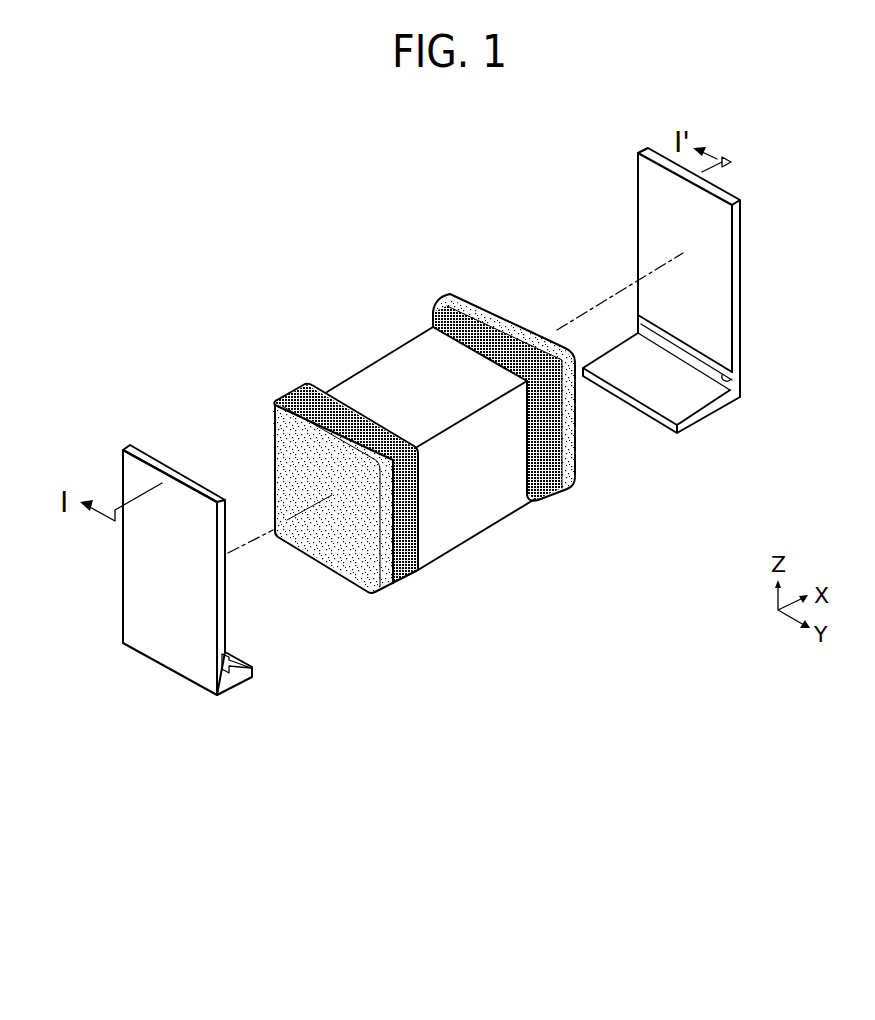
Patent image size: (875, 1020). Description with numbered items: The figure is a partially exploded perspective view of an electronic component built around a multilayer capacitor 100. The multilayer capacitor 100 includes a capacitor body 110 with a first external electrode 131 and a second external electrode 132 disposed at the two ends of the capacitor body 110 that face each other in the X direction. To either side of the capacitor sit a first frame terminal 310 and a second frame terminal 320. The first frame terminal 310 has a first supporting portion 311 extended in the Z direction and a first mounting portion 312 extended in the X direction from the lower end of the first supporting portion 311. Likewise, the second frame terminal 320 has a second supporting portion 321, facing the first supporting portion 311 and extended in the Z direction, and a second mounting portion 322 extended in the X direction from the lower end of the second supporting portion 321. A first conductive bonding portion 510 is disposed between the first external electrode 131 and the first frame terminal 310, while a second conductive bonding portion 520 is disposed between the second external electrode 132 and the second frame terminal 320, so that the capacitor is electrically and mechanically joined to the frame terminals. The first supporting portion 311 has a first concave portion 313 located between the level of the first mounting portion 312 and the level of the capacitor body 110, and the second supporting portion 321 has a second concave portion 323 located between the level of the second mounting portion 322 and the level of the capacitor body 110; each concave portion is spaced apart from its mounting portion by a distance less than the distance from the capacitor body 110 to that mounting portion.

The multilayer capacitor 100 is at (394, 415).
The capacitor body 110 is at (360, 385).
The first external electrode 131 is at (316, 464).
The second external electrode 132 is at (500, 369).
The first conductive bonding portion 510 is at (310, 382).
The second conductive bonding portion 520 is at (481, 306).
The first frame terminal 310 is at (243, 589).
The first supporting portion 311 is at (185, 650).
The first mounting portion 312 is at (236, 667).
The first concave portion 313 is at (269, 645).
The second frame terminal 320 is at (715, 290).
The second supporting portion 321 is at (713, 342).
The second mounting portion 322 is at (800, 328).
The second concave portion 323 is at (734, 374).